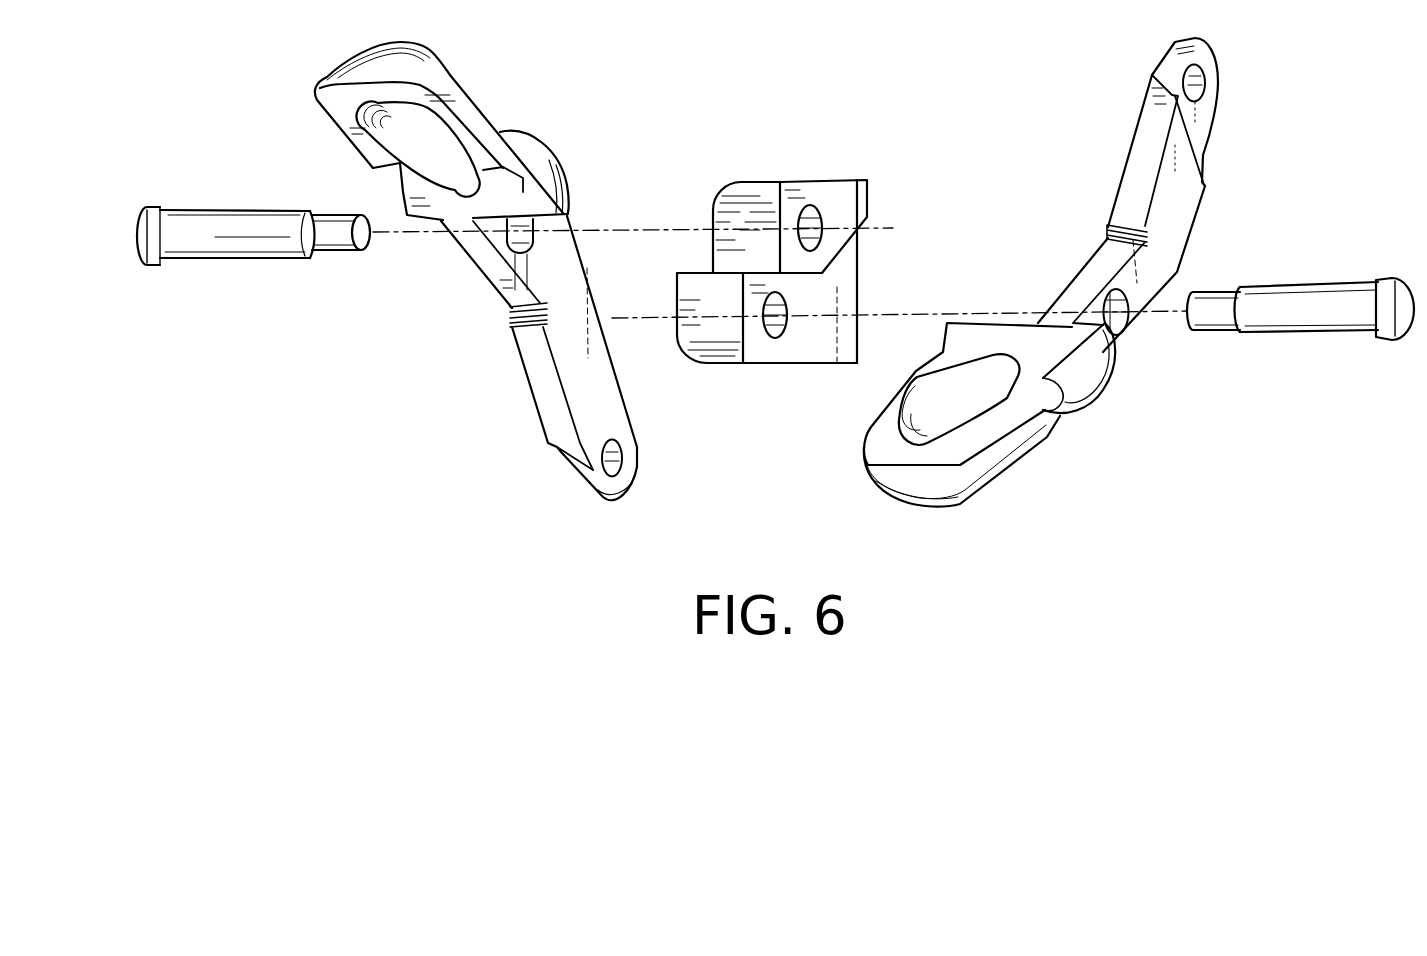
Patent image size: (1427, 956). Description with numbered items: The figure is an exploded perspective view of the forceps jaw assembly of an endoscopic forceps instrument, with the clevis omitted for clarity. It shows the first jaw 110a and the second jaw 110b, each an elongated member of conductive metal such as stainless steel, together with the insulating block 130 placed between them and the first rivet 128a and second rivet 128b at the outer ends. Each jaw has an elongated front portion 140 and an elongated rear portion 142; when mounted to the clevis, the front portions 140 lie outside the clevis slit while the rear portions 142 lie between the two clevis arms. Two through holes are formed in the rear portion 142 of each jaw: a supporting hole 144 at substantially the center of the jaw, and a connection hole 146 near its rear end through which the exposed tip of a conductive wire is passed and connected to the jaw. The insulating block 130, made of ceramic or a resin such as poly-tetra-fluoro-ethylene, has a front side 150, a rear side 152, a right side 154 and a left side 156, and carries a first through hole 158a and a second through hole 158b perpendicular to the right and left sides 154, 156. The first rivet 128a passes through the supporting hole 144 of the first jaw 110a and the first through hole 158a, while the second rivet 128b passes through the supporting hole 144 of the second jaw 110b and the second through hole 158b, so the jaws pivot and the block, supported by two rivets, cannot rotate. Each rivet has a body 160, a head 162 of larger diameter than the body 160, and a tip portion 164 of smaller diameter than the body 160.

The first jaw 110a is at (1187, 385).
The second jaw 110b is at (371, 295).
The first rivet 128a is at (1373, 237).
The second rivet 128b is at (187, 152).
The insulating block 130 is at (791, 274).
The front portion 140 is at (418, 256).
The rear portion 142 is at (466, 347).
The supporting hole 144 is at (527, 242).
The connection hole 146 is at (624, 467).
The front side 150 is at (698, 297).
The rear side 152 is at (858, 346).
The right side 154 is at (850, 289).
The left side 156 is at (707, 208).
The first through hole 158a is at (777, 334).
The second through hole 158b is at (818, 208).
The body 160 is at (232, 248).
The head 162 is at (151, 265).
The tip portion 164 is at (334, 222).